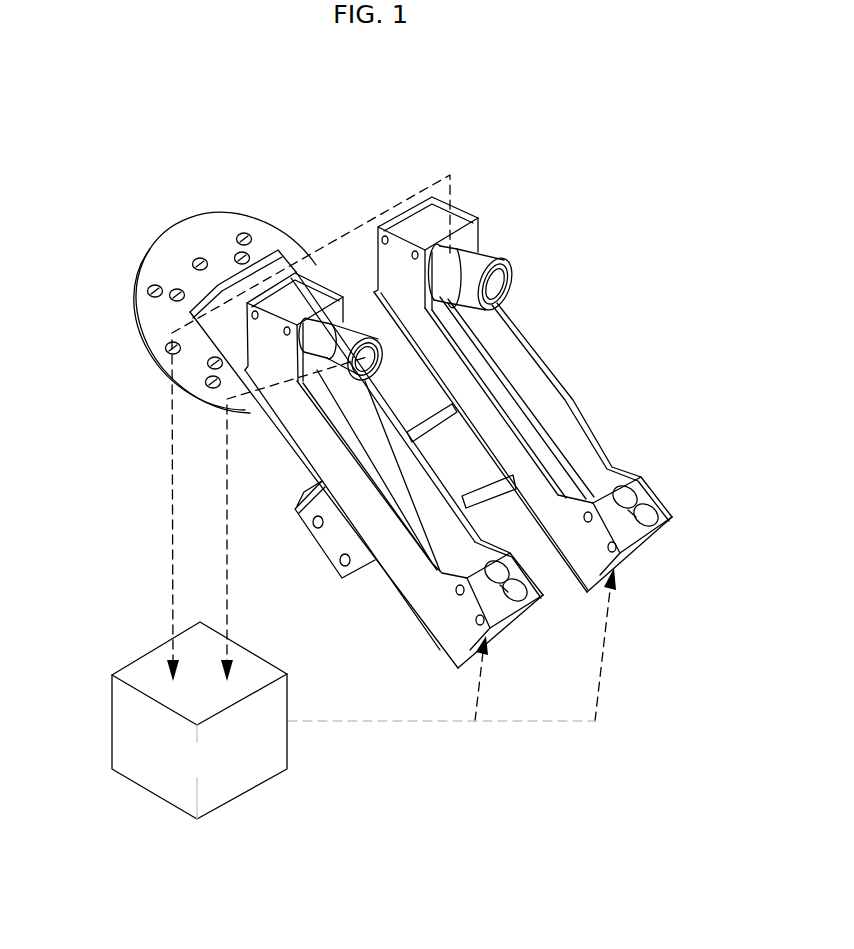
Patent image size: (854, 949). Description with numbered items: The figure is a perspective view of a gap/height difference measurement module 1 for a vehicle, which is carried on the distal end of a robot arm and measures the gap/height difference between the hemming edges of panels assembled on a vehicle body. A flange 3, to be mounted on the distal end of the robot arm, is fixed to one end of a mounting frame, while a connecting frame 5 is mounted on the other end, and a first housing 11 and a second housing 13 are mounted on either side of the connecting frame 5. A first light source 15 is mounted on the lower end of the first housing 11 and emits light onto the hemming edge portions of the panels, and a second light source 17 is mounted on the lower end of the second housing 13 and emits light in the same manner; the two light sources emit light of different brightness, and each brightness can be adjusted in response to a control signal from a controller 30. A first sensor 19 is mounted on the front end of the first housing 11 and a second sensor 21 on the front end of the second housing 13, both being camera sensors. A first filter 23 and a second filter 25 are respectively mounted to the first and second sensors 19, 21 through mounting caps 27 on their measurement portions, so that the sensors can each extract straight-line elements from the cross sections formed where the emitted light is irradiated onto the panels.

The gap/height difference measurement module 1 is at (412, 124).
The flange 3 is at (214, 222).
The connecting frame 5 is at (325, 543).
The first housing 11 is at (425, 603).
The second housing 13 is at (585, 413).
The first light source 15 is at (512, 618).
The second light source 17 is at (642, 553).
The first sensor 19 is at (326, 322).
The second sensor 21 is at (455, 245).
The first filter 23 is at (367, 358).
The second filter 25 is at (497, 285).
The mounting cap 27 is at (356, 338).
The controller 30 is at (112, 721).